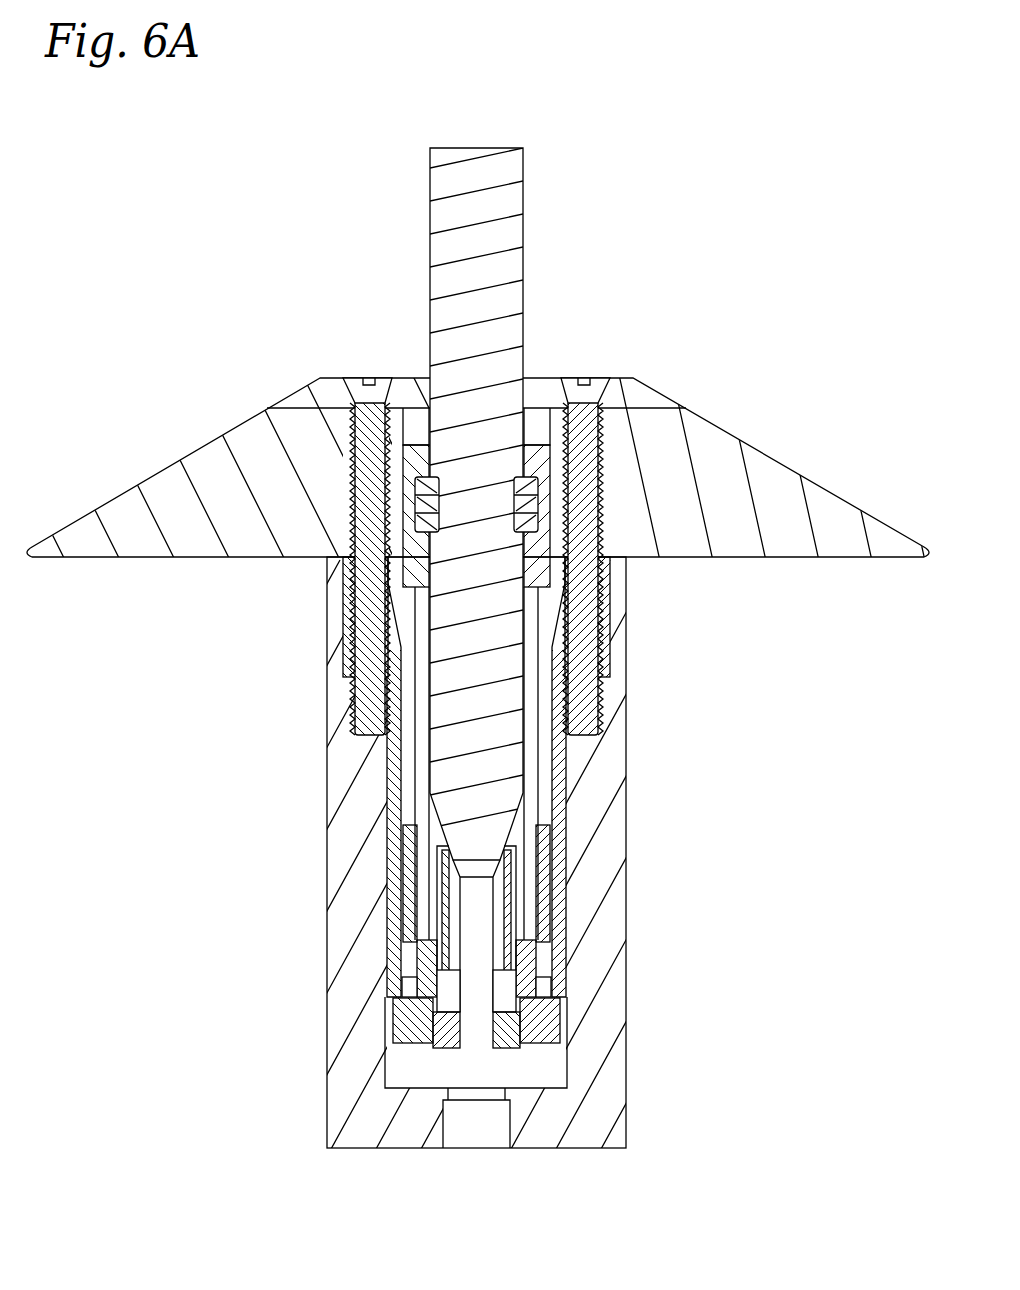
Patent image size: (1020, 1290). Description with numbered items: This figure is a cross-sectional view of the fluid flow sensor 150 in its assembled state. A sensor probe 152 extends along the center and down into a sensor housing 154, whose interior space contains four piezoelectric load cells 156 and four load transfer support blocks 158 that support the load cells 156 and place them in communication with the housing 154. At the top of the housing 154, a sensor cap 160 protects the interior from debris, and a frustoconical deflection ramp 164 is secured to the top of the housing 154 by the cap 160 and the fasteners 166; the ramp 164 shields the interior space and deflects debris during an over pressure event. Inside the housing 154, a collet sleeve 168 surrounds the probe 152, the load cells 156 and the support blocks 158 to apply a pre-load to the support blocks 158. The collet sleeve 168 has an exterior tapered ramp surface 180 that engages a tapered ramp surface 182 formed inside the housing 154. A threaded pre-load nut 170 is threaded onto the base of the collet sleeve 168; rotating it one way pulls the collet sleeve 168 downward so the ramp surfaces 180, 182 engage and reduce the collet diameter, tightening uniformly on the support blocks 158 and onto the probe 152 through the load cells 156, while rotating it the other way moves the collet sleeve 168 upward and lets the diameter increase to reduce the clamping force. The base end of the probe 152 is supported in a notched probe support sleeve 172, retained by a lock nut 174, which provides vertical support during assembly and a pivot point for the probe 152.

The fluid flow sensor 150 is at (755, 688).
The sensor probe 152 is at (523, 200).
The sensor housing 154 is at (395, 828).
The piezoelectric load cells 156 is at (530, 478).
The load transfer support blocks 158 is at (415, 453).
The sensor cap 160 is at (645, 402).
The deflection ramp 164 is at (740, 462).
The fasteners 166 is at (360, 467).
The collet sleeve 168 is at (410, 760).
The threaded pre-load nut 170 is at (543, 1022).
The probe support sleeve 172 is at (508, 897).
The lock nut 174 is at (447, 1040).
The exterior tapered ramp surface 180 is at (355, 630).
The tapered ramp surface 182 is at (552, 650).